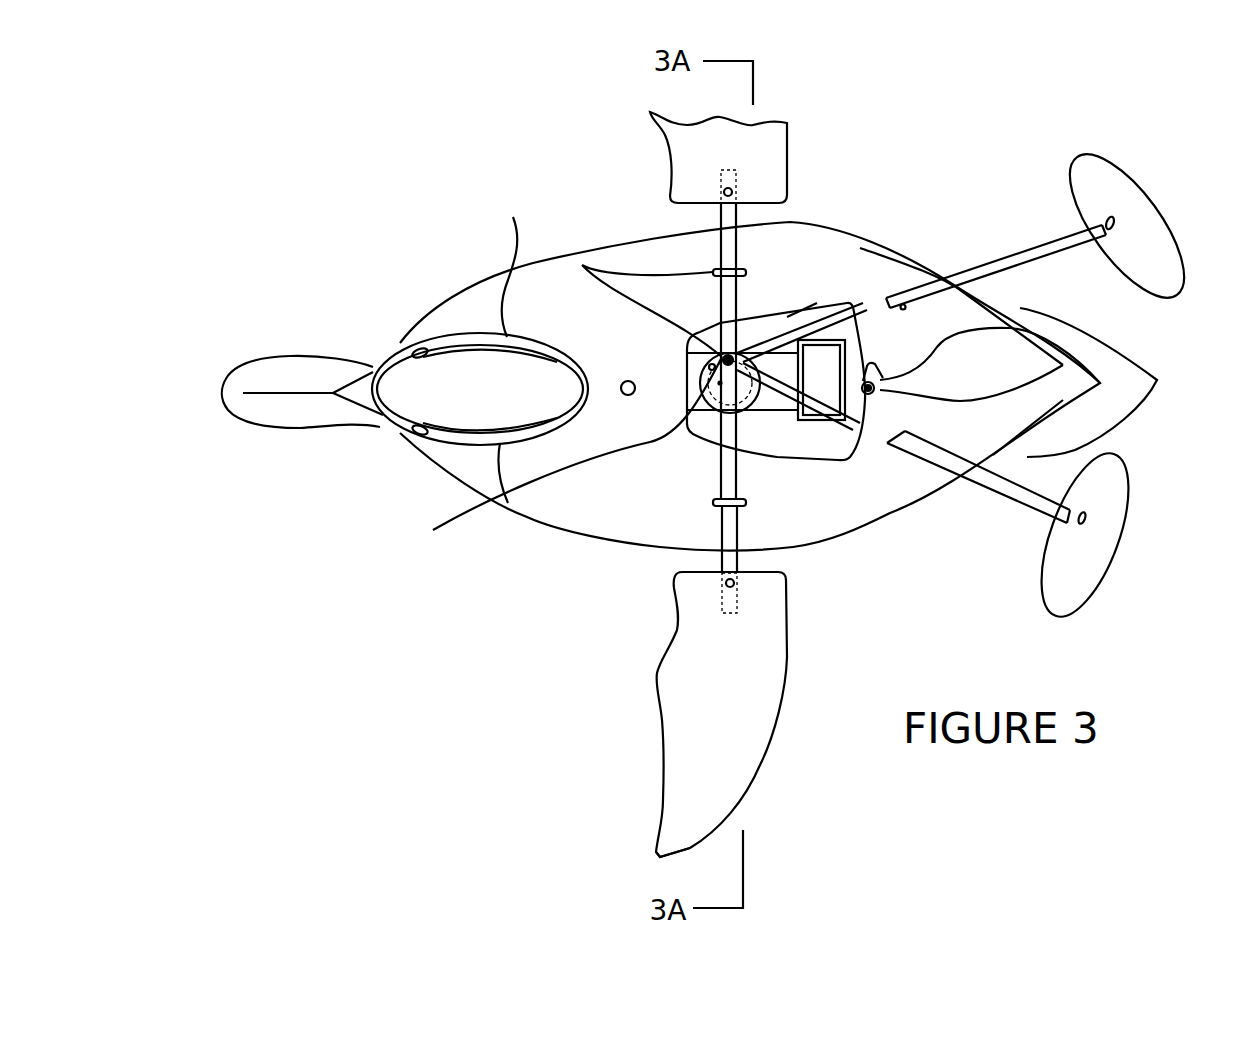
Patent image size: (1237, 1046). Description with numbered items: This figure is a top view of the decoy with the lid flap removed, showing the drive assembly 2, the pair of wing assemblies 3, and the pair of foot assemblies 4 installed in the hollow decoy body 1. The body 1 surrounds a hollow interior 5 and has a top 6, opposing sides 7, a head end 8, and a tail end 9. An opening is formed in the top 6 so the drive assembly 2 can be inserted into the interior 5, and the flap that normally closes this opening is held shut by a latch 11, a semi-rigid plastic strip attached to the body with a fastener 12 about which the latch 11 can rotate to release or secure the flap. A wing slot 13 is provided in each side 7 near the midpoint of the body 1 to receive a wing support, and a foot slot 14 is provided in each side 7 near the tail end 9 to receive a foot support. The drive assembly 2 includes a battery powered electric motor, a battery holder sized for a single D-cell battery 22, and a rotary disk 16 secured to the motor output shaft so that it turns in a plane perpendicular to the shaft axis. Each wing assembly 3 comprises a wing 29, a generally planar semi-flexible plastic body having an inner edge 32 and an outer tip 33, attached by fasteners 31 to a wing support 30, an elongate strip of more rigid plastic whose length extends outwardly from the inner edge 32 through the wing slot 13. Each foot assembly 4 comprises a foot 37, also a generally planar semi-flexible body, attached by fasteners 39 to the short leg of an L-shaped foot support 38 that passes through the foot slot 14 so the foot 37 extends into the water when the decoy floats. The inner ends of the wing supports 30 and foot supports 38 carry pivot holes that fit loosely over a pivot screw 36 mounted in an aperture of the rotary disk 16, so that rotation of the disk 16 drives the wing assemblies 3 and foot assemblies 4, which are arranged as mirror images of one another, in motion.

The decoy body 1 is at (467, 280).
The drive assembly 2 is at (762, 412).
The wing assembly 3 is at (713, 222).
The foot assembly 4 is at (1083, 222).
The hollow interior 5 is at (787, 317).
The top 6 is at (618, 366).
The side 7 is at (573, 503).
The head end 8 is at (392, 439).
The tail end 9 is at (1167, 360).
The latch 11 is at (1023, 308).
The fastener 12 is at (1067, 363).
The wing slot 13 is at (582, 265).
The foot slot 14 is at (884, 300).
The rotary disk 16 is at (557, 455).
The D-cell battery 22 is at (810, 382).
The wing 29 is at (780, 138).
The wing support 30 is at (737, 230).
The fasteners 31 is at (735, 194).
The inner edge 32 is at (677, 203).
The outer tip 33 is at (655, 856).
The pivot screw 36 is at (515, 343).
The foot 37 is at (1087, 167).
The foot support 38 is at (1053, 245).
The fasteners 39 is at (1112, 222).